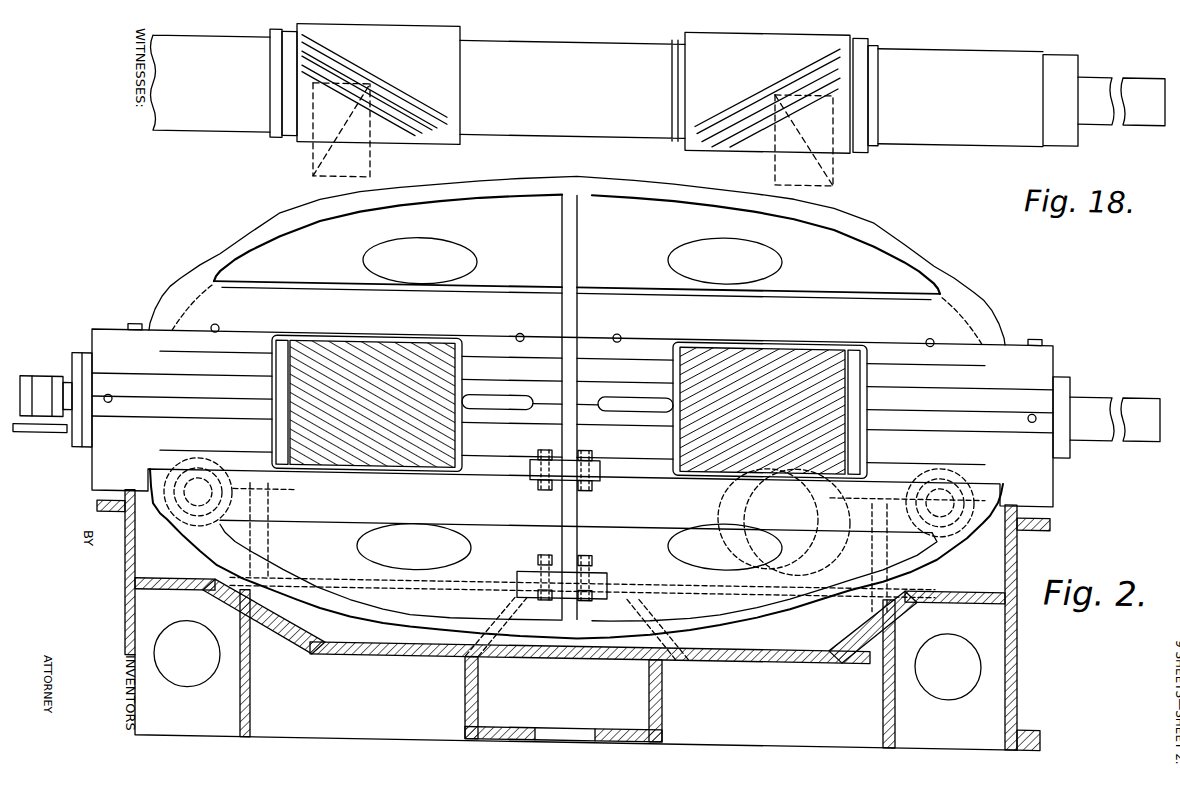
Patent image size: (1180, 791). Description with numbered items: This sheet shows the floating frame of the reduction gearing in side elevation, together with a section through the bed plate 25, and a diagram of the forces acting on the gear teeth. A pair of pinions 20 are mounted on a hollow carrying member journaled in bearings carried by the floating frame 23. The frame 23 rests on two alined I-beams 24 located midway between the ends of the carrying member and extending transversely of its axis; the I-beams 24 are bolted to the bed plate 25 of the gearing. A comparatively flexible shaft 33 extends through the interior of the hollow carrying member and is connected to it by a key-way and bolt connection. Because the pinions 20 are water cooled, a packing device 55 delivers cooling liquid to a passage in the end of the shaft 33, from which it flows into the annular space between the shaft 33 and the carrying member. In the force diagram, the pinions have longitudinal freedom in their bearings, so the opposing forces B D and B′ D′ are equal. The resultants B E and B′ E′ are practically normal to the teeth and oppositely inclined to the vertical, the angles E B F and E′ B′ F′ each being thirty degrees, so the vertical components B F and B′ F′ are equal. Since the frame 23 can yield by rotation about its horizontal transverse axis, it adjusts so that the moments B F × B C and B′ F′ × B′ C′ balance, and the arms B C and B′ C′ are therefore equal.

In FIG. 18, the tooth contact point B is at (573, 89).
In FIG. 18, the transverse axis point C is at (571, 84).
In FIG. 18, the opposing force end point D is at (571, 85).
In FIG. 18, the resultant force end point E is at (572, 147).
In FIG. 18, the vertical component end point F is at (573, 137).
In FIG. 2, the pinions 20 is at (421, 357).
In FIG. 2, the floating frame 23 is at (905, 244).
In FIG. 2, the I-beams 24 is at (578, 496).
In FIG. 2, the bed plate 25 is at (1017, 628).
In FIG. 2, the shaft 33 is at (1082, 388).
In FIG. 2, the packing device 55 is at (38, 380).